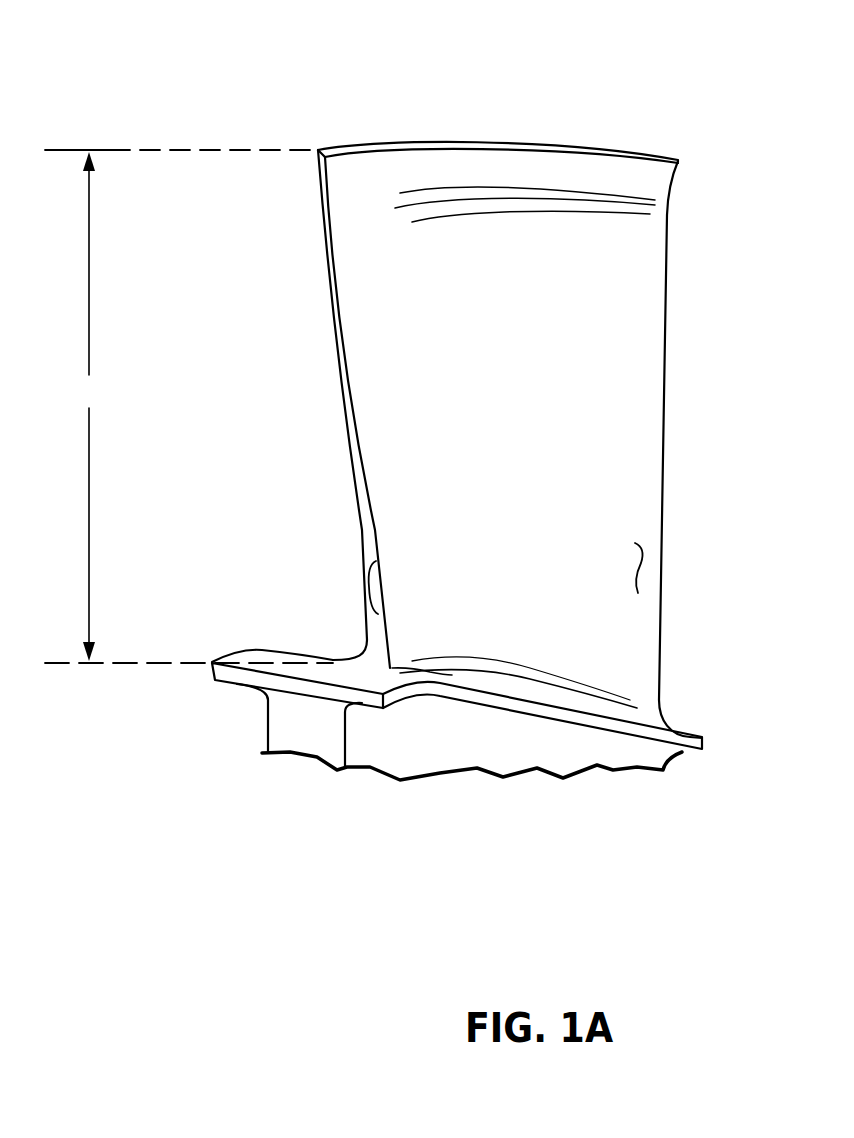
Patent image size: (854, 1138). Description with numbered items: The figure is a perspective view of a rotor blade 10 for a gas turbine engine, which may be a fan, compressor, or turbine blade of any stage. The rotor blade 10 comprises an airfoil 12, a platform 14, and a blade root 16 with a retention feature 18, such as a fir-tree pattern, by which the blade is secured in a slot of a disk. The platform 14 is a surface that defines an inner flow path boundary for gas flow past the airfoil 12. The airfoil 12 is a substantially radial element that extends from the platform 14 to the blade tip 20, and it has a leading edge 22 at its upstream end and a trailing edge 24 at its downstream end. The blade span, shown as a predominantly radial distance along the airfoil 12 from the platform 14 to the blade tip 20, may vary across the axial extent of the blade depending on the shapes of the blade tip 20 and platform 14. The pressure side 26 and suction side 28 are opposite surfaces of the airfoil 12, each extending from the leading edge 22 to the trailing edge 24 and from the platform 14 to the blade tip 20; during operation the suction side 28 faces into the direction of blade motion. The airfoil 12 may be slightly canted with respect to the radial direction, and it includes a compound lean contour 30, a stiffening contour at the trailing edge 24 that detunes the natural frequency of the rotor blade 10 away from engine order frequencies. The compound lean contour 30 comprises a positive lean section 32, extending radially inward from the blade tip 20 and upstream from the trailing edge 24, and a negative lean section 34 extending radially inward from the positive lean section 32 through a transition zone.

The rotor blade 10 is at (667, 66).
The airfoil 12 is at (323, 422).
The platform 14 is at (213, 671).
The blade root 16 is at (681, 769).
The retention feature 18 is at (313, 732).
The blade tip 20 is at (455, 140).
The leading edge 22 is at (330, 303).
The trailing edge 24 is at (666, 415).
The pressure side 26 is at (371, 588).
The suction side 28 is at (644, 565).
The compound lean contour 30 is at (747, 157).
The positive lean section 32 is at (683, 157).
The negative lean section 34 is at (683, 210).